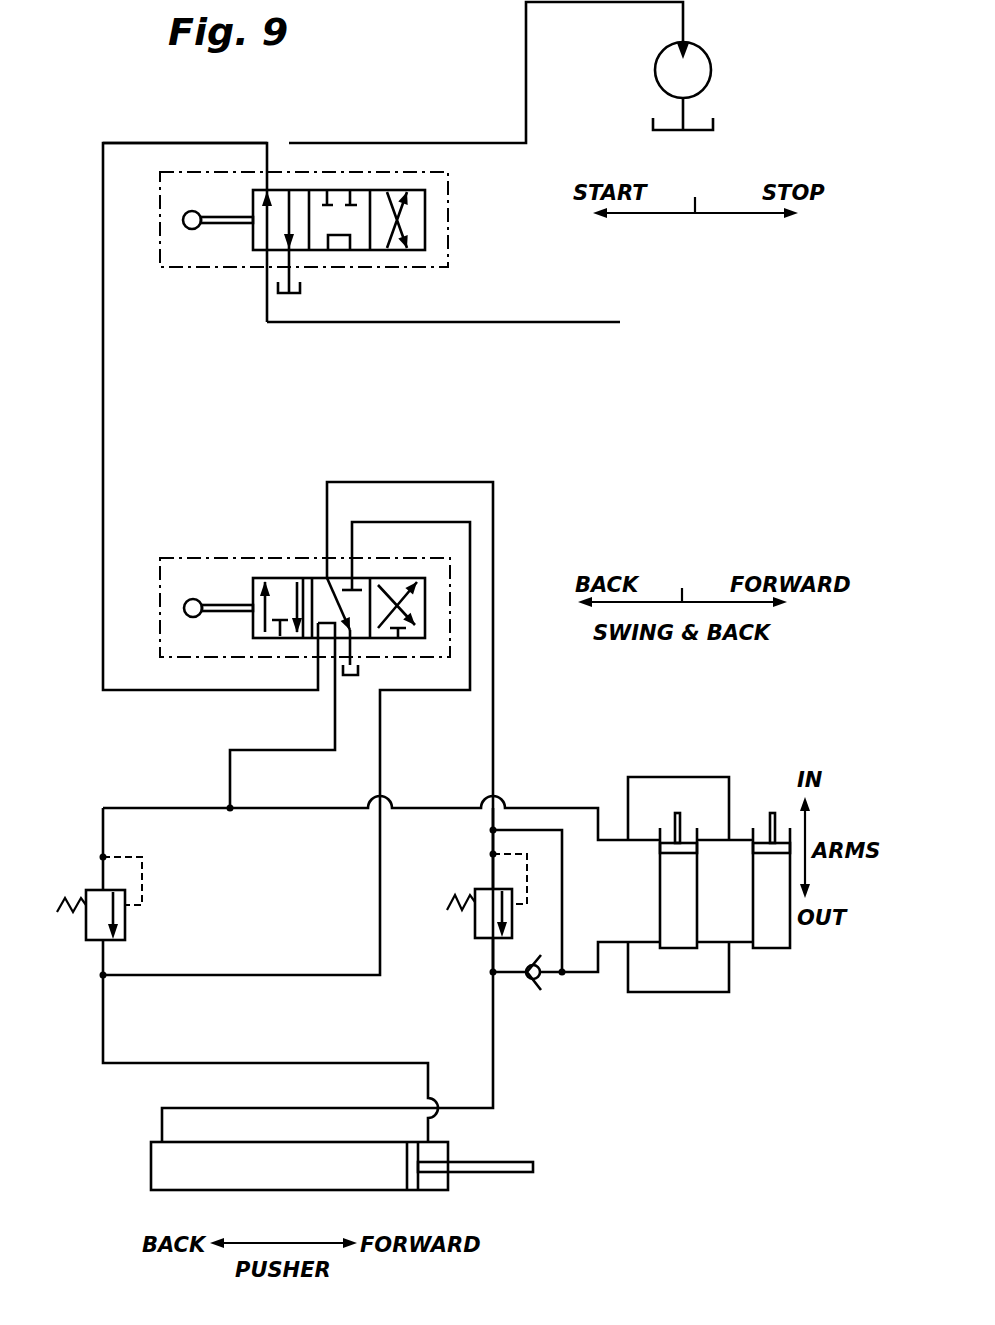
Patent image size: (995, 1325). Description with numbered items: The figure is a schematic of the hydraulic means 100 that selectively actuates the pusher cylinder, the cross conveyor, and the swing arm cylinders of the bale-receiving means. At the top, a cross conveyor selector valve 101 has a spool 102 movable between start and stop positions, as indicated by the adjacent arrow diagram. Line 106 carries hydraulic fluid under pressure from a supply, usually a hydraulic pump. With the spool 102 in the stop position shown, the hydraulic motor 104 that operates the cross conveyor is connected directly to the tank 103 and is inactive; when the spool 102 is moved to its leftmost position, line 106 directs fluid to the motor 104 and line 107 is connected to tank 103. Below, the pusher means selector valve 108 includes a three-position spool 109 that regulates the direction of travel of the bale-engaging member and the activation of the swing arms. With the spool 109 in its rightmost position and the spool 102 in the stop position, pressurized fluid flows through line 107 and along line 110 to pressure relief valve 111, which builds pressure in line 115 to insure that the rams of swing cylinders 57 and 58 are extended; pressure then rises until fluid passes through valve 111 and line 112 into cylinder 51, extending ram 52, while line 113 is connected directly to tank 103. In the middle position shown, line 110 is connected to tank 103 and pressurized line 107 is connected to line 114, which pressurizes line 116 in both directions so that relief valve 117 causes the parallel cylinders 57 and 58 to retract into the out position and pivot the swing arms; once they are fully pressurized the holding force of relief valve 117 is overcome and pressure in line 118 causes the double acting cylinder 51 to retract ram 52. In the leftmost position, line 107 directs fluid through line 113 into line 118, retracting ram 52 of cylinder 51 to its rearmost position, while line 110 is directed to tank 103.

The hydraulic means 100 is at (116, 120).
The cross conveyor selector valve 101 is at (448, 214).
The spool 102 is at (253, 235).
The tank 103 is at (300, 292).
The hydraulic motor 104 is at (712, 72).
The line 106 is at (455, 321).
The line 107 is at (103, 232).
The pusher means selector valve 108 is at (258, 525).
The three-position spool 109 is at (253, 630).
The line 110 is at (460, 482).
The pressure relief valve 111 is at (475, 918).
The line 112 is at (493, 1042).
The line 113 is at (390, 522).
The line 114 is at (305, 750).
The line 115 is at (562, 918).
The line 116 is at (315, 808).
The relief valve 117 is at (85, 918).
The line 118 is at (342, 1063).
The cylinder 51 is at (151, 1165).
The ram 52 is at (518, 1162).
The swing cylinder 57 is at (660, 868).
The swing cylinder 58 is at (753, 868).